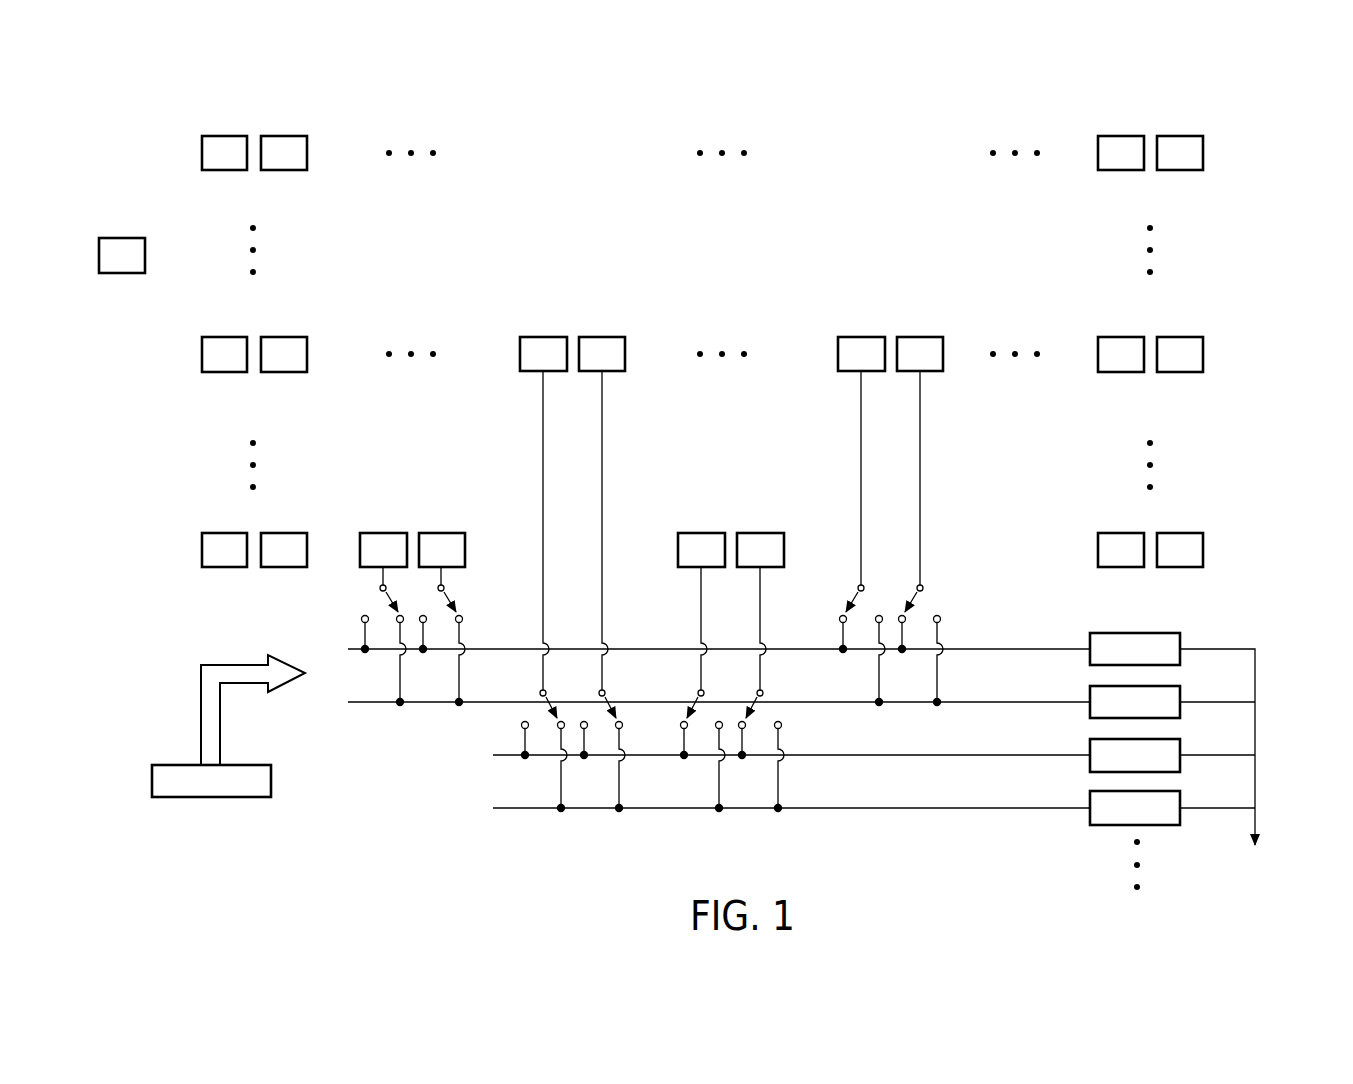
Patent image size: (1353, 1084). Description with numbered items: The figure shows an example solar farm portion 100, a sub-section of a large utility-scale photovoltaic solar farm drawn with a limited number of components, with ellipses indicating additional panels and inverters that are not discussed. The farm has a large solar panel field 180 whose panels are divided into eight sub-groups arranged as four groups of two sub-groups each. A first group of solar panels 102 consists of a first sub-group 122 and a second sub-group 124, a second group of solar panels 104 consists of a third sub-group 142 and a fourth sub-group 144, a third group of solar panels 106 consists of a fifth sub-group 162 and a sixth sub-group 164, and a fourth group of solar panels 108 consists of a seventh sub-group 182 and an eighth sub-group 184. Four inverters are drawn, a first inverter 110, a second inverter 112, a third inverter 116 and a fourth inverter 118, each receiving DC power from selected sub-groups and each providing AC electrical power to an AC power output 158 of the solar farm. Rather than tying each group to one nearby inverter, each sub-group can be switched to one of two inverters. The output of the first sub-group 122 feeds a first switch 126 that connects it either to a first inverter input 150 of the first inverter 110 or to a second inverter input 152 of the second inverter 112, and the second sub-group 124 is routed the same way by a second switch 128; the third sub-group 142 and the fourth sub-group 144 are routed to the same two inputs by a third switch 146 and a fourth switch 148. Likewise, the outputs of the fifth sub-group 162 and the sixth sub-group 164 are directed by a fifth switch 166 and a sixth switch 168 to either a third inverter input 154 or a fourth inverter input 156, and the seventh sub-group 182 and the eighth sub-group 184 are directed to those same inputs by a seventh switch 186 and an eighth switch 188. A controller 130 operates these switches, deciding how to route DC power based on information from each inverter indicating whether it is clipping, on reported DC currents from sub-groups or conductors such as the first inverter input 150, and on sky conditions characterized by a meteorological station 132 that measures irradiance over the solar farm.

The solar farm portion 100 is at (1280, 163).
The first group of solar panels 102 is at (828, 350).
The second group of solar panels 104 is at (352, 545).
The third group of solar panels 106 is at (510, 350).
The fourth group of solar panels 108 is at (668, 545).
The inverter 1 110 is at (1180, 633).
The inverter 2 112 is at (1180, 686).
The inverter 3 116 is at (1180, 791).
The inverter 4 118 is at (1180, 739).
The sub-group 1A 122 is at (861, 337).
The sub-group 1B 124 is at (920, 337).
The first switch 126 is at (858, 589).
The second switch 128 is at (923, 589).
The controller 130 is at (210, 797).
The meteorological station 132 is at (122, 238).
The sub-group 2A 142 is at (383, 533).
The sub-group 2B 144 is at (442, 533).
The third switch 146 is at (380, 589).
The fourth switch 148 is at (444, 589).
The first inverter input 150 is at (1078, 649).
The second inverter input 152 is at (1078, 702).
The third inverter input 154 is at (1078, 755).
The fourth inverter input 156 is at (1078, 808).
The AC power output 158 is at (1255, 818).
The sub-group 3A 162 is at (543, 337).
The sub-group 3B 164 is at (602, 337).
The fifth switch 166 is at (540, 692).
The sixth switch 168 is at (605, 692).
The solar panel field 180 is at (141, 467).
The sub-group 4A 182 is at (701, 533).
The sub-group 4B 184 is at (760, 533).
The seventh switch 186 is at (698, 692).
The eighth switch 188 is at (763, 692).